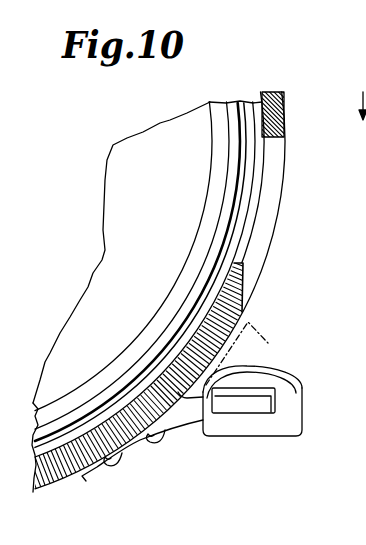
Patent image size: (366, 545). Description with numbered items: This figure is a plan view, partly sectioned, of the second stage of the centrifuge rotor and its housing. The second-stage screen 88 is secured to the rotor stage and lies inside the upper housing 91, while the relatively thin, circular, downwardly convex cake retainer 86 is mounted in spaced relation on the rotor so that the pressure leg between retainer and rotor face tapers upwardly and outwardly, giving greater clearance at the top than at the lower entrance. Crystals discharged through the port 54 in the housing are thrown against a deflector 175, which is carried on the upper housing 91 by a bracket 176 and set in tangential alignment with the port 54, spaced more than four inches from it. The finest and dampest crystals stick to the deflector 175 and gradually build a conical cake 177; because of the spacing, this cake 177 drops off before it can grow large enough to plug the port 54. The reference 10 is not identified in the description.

The wheel assembly 10 is at (357, 119).
The port 54 is at (266, 160).
The cake retainer 86 is at (98, 300).
The second-stage screen 88 is at (232, 231).
The upper housing 91 is at (284, 101).
The deflector 175 is at (290, 419).
The bracket 176 is at (127, 447).
The conical cake 177 is at (260, 347).